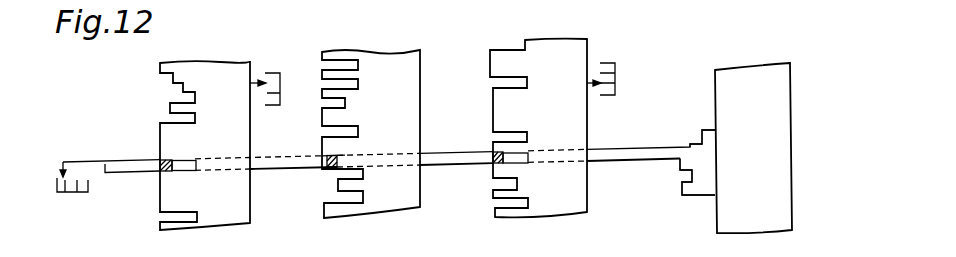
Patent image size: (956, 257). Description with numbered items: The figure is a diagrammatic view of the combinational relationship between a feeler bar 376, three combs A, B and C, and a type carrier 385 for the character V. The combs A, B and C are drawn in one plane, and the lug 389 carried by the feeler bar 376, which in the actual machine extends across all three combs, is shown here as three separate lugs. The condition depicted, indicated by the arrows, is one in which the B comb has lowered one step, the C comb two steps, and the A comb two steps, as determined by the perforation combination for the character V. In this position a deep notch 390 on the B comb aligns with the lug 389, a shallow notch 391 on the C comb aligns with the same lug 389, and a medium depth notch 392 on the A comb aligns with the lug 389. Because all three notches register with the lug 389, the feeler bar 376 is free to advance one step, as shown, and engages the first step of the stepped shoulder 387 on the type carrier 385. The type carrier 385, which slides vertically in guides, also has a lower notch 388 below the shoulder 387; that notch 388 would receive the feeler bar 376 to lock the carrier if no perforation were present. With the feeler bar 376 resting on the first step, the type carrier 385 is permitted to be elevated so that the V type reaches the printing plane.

The feeler bar 376 is at (637, 159).
The type carrier 385 is at (760, 223).
The stepped shoulder 387 is at (703, 137).
The lower notch 388 is at (682, 181).
The lug 389 is at (160, 171).
The deep notch 390 is at (182, 169).
The shallow notch 391 is at (339, 158).
The medium depth notch 392 is at (529, 152).
The comb A is at (490, 56).
The comb B is at (161, 69).
The comb C is at (324, 52).